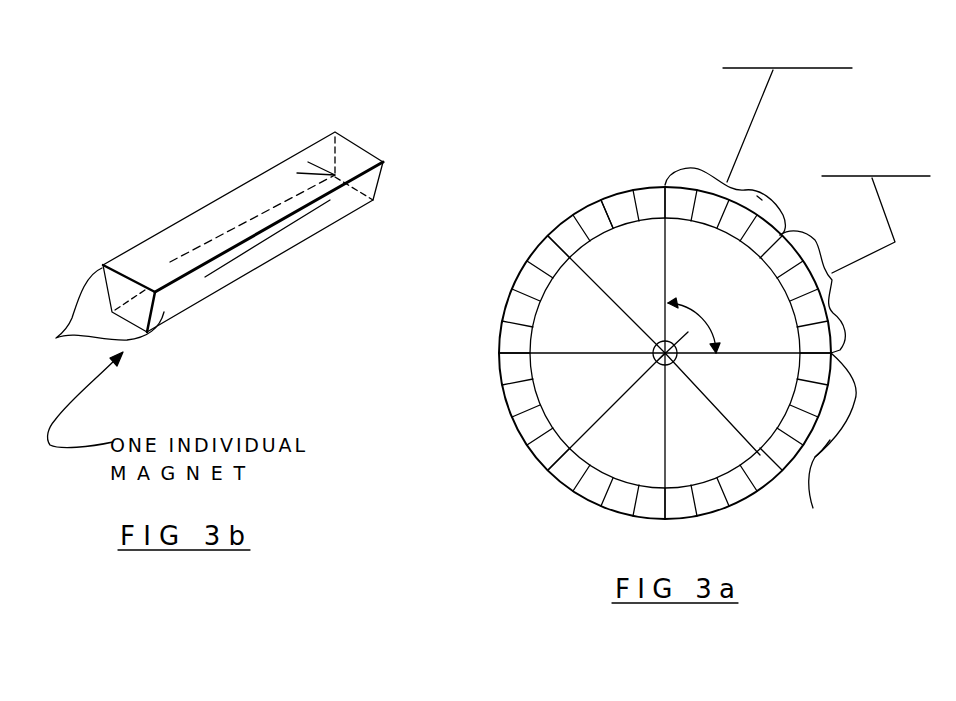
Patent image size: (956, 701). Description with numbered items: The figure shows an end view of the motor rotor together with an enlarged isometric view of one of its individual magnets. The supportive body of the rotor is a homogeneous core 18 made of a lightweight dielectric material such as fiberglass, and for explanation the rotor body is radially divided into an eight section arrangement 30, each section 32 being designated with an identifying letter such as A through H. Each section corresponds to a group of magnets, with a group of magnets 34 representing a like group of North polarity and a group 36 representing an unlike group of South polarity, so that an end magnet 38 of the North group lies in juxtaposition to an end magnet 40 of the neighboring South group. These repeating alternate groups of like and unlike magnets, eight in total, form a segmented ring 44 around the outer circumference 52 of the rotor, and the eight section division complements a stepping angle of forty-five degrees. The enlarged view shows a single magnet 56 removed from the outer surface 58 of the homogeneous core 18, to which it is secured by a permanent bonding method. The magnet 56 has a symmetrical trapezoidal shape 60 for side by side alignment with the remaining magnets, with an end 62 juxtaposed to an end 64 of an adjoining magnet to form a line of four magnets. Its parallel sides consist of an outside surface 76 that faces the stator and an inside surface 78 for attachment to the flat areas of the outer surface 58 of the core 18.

In FIG. 3a, the homogeneous core 18 is at (500, 382).
In FIG. 3a, the eight section arrangement 30 is at (692, 232).
In FIG. 3a, the section 32 is at (773, 332).
In FIG. 3a, the group of magnets 34 is at (833, 305).
In FIG. 3a, the group of magnets 36 is at (697, 168).
In FIG. 3a, the end magnet 38 is at (720, 298).
In FIG. 3a, the end magnet 40 is at (763, 198).
In FIG. 3a, the segmented ring 44 is at (580, 508).
In FIG. 3a, the outer circumference 52 is at (502, 312).
In FIG. 3a, the outer surface 58 is at (600, 212).
In FIG. 3b, the outer surface 58 is at (290, 0).
In FIG. 3b, the single magnet 56 is at (228, 287).
In FIG. 3b, the symmetrical trapezoidal shape 60 is at (93, 319).
In FIG. 3b, the end 62 is at (383, 162).
In FIG. 3b, the end 64 is at (230, 190).
In FIG. 3b, the outside surface 76 is at (340, 145).
In FIG. 3b, the inside surface 78 is at (330, 212).